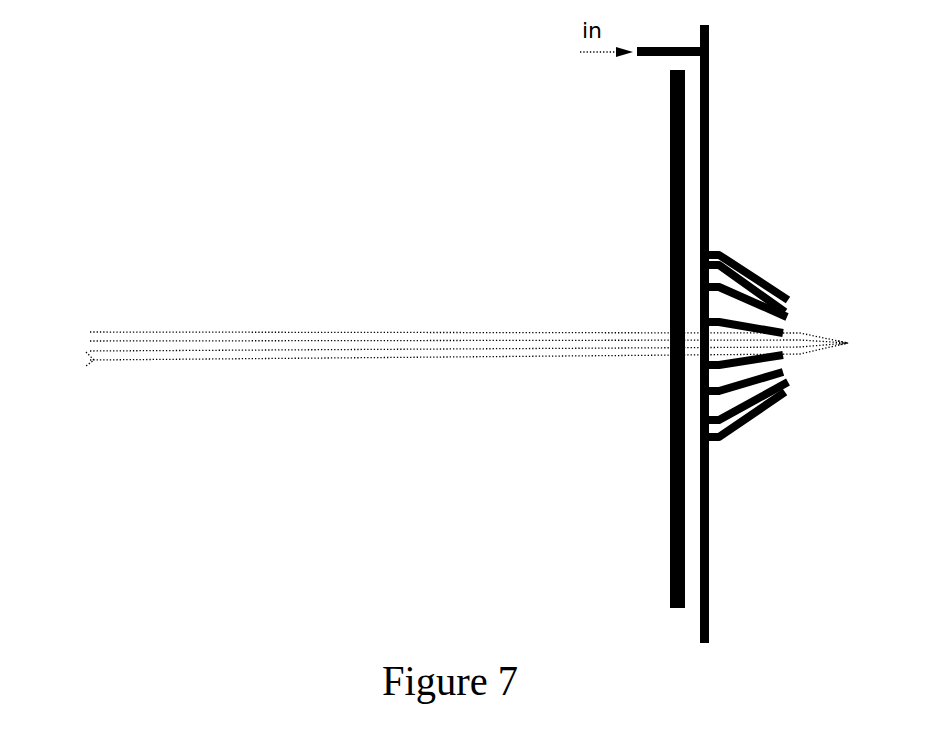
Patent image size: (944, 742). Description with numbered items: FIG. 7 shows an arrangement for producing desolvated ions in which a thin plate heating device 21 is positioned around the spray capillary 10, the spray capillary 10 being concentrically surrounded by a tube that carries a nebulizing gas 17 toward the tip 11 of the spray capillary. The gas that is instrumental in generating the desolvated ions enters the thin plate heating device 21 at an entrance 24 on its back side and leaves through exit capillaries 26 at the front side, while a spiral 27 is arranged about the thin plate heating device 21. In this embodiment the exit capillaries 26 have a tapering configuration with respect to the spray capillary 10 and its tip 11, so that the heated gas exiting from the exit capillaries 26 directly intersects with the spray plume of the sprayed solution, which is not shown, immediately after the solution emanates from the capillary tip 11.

The spray capillary 10 is at (450, 340).
The tip 11 is at (836, 363).
The nebulizing gas 17 is at (88, 358).
The thin plate heating device 21 is at (725, 334).
The entrance 24 is at (670, 34).
The exit capillaries 26 is at (748, 339).
The spiral 27 is at (659, 339).